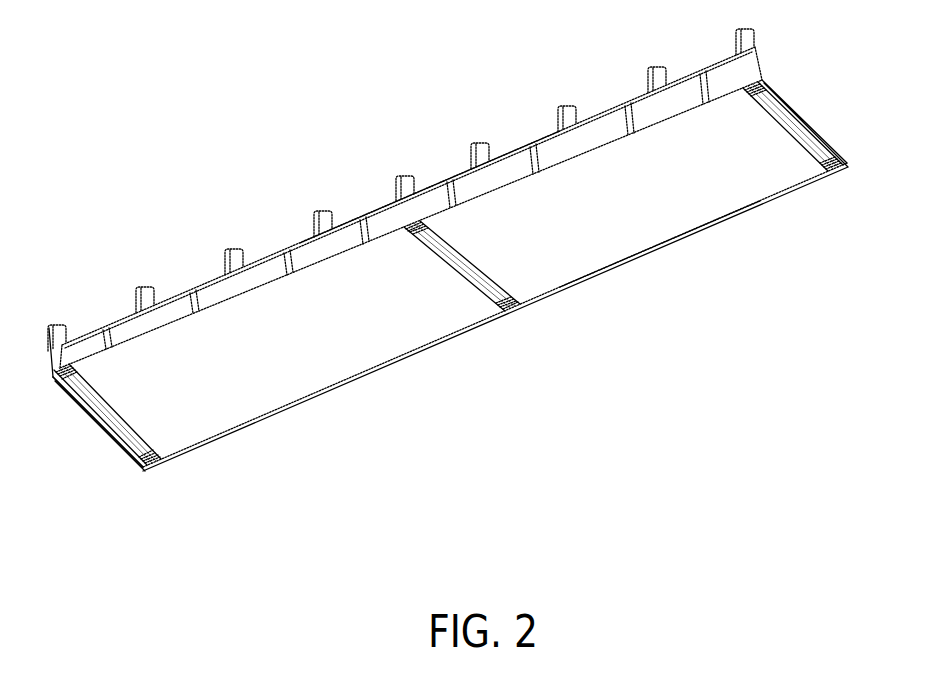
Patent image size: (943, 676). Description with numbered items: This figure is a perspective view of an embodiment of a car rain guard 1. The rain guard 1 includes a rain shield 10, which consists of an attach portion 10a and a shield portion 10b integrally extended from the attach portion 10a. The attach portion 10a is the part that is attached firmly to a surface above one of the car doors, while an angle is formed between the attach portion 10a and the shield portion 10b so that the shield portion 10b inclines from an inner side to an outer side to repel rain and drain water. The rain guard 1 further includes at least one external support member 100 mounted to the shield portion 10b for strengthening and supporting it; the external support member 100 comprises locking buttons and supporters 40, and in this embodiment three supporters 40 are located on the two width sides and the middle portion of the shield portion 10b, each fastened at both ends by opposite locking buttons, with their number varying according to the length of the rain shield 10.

The rain guard 1 is at (310, 162).
The rain shield 10 is at (308, 398).
The attach portion 10a is at (552, 148).
The shield portion 10b is at (628, 243).
The supporter 40 is at (798, 118).
The external support member 100 is at (78, 407).